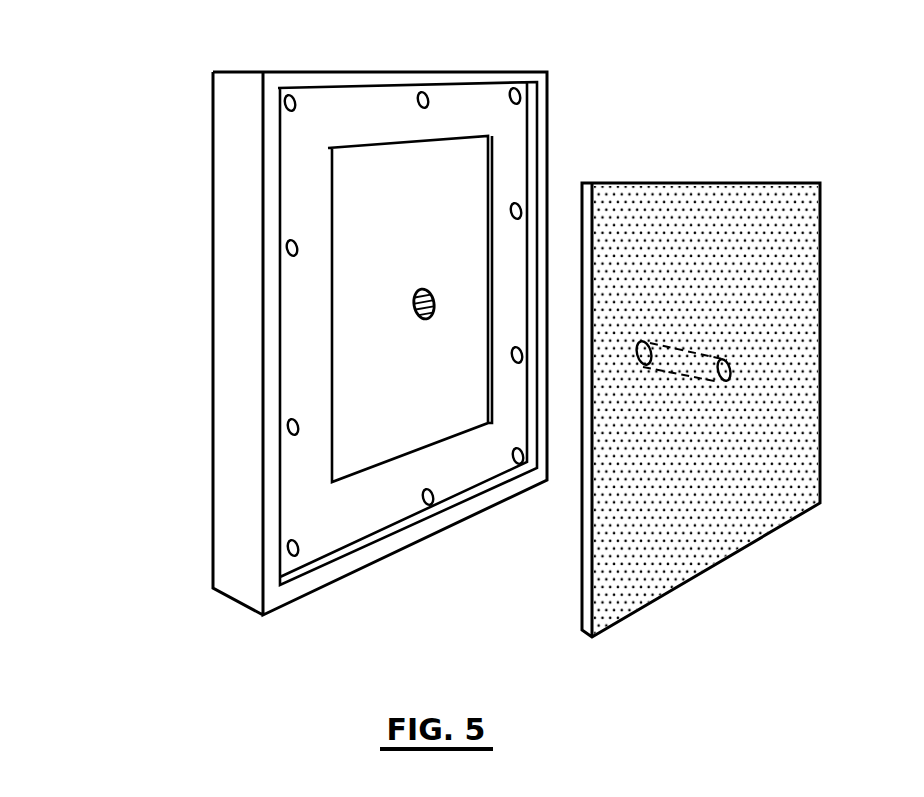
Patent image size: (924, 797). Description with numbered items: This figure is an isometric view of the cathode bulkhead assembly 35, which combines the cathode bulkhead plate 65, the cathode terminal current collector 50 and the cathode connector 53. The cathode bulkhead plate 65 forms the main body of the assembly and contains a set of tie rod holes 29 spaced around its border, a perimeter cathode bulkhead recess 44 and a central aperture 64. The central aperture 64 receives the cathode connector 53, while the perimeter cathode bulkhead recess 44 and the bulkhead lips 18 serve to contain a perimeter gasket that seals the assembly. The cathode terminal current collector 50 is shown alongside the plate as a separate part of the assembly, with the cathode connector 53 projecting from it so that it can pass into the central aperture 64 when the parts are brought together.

The bulkhead lips 18 is at (342, 566).
The tie rod holes 29 is at (521, 99).
The cathode bulkhead assembly 35 is at (592, 75).
The perimeter cathode bulkhead recess 44 is at (296, 483).
The cathode terminal current collector 50 is at (822, 297).
The cathode connector 53 is at (672, 360).
The central aperture 64 is at (413, 301).
The cathode bulkhead plate 65 is at (247, 389).